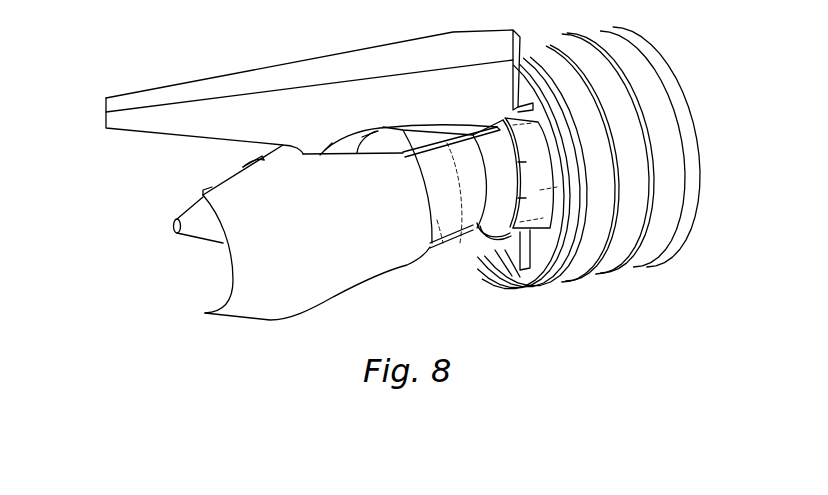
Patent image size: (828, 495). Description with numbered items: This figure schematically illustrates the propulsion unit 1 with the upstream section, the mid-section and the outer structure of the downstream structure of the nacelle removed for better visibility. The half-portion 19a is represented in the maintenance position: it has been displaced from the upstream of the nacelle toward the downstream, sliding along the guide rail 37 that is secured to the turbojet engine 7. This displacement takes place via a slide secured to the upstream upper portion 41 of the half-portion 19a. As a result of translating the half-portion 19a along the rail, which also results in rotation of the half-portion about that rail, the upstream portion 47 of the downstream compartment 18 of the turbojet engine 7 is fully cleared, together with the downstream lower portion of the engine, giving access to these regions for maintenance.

The propulsion unit 1 is at (118, 70).
The turbojet engine 7 is at (588, 237).
The downstream compartment 18 is at (433, 250).
The half-portion 19a is at (263, 290).
The guide rail 37 is at (457, 250).
The upstream upper portion 41 is at (390, 143).
The upstream portion 47 is at (488, 250).